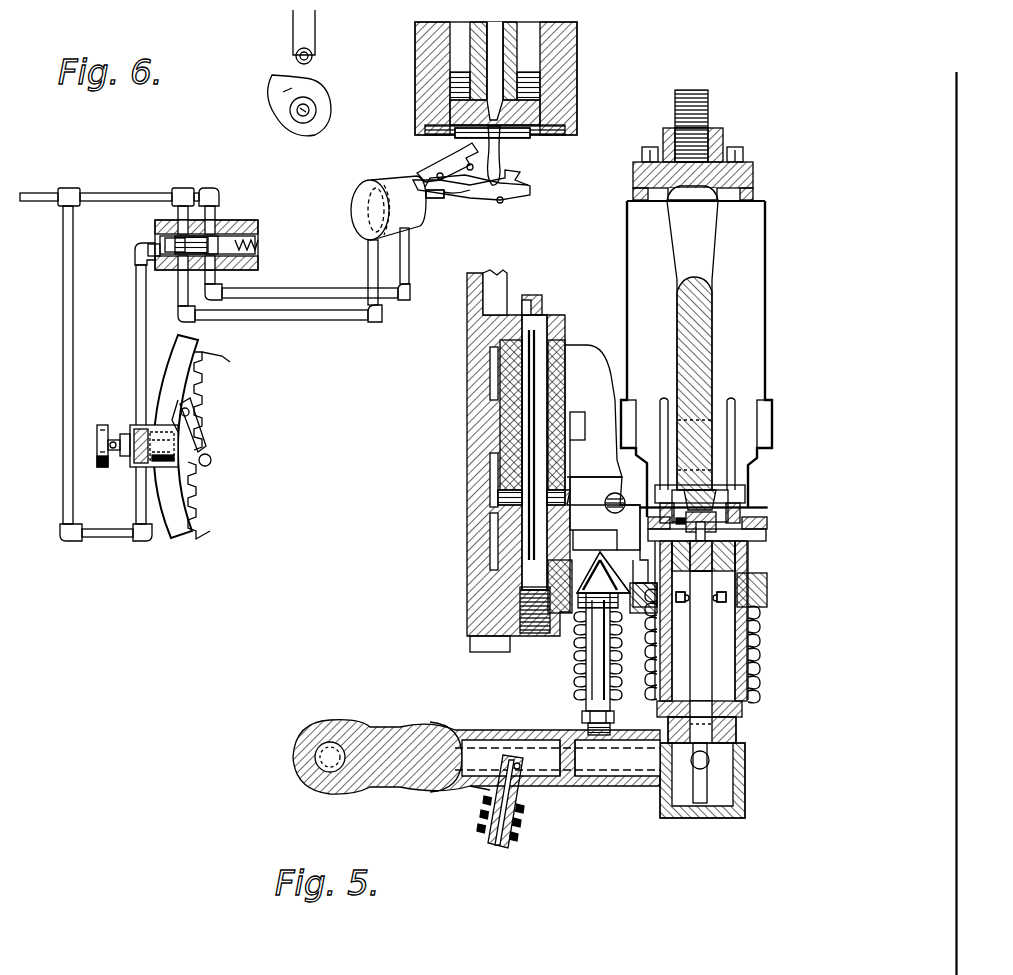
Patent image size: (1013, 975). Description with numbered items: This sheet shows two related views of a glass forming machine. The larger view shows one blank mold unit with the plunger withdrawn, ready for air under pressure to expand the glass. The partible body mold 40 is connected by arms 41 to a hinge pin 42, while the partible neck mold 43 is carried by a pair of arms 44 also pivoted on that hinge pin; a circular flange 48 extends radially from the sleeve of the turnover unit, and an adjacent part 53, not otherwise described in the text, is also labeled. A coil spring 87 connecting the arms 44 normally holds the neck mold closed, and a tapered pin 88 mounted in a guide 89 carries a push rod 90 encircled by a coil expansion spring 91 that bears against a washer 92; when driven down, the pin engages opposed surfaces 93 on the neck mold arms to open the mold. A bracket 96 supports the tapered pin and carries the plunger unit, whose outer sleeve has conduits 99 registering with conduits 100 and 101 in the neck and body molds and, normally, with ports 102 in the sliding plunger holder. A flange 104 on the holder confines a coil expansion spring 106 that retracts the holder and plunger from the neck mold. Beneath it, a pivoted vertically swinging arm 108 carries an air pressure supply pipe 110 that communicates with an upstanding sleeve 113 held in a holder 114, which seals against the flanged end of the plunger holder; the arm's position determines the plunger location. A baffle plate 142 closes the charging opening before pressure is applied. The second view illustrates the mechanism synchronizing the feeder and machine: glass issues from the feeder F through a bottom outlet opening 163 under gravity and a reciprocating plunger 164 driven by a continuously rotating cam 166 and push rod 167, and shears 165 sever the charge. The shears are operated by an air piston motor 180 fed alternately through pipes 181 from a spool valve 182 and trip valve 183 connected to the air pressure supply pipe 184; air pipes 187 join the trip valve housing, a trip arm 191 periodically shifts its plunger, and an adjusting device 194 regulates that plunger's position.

In FIG. 5, the partible body mold 40 is at (635, 260).
In FIG. 5, the arms 41 is at (595, 355).
In FIG. 5, the hinge pin 42 is at (542, 302).
In FIG. 5, the partible neck mold 43 is at (725, 490).
In FIG. 5, the arms 44 is at (585, 522).
In FIG. 5, the circular flange 48 is at (470, 590).
In FIG. 5, the stop 53 is at (475, 640).
In FIG. 5, the coil spring 87 is at (628, 486).
In FIG. 5, the tapered pin 88 is at (622, 572).
In FIG. 5, the guide 89 is at (646, 612).
In FIG. 5, the push rod 90 is at (585, 655).
In FIG. 5, the coil expansion spring 91 is at (585, 678).
In FIG. 5, the washer 92 is at (614, 718).
In FIG. 5, the opposed surfaces 93 is at (612, 556).
In FIG. 5, the bracket 96 is at (767, 592).
In FIG. 5, the conduits 99 is at (740, 557).
In FIG. 5, the conduits 100 is at (668, 500).
In FIG. 5, the conduits 101 is at (734, 410).
In FIG. 5, the ports 102 is at (701, 636).
In FIG. 5, the flange 104 is at (742, 708).
In FIG. 5, the coil expansion spring 106 is at (750, 622).
In FIG. 5, the pivoted vertically swinging arm 108 is at (480, 713).
In FIG. 5, the air pressure supply pipe 110 is at (538, 754).
In FIG. 5, the upstanding sleeve 113 is at (736, 730).
In FIG. 5, the holder 114 is at (745, 792).
In FIG. 5, the baffle plate 142 is at (752, 160).
In FIG. 5, the bottom outlet opening 163 is at (510, 142).
In FIG. 5, the reciprocating plunger 164 is at (502, 34).
In FIG. 5, the shears 165 is at (515, 198).
In FIG. 6, the continuously rotating cam 166 is at (305, 80).
In FIG. 6, the push rod 167 is at (305, 30).
In FIG. 5, the feeder F is at (575, 66).
In FIG. 6, the air operated piston type motor 180 is at (420, 228).
In FIG. 6, the pipes 181 is at (334, 300).
In FIG. 6, the spool valve 182 is at (222, 222).
In FIG. 6, the trip valve 183 is at (185, 470).
In FIG. 6, the air pressure supply pipe 184 is at (52, 198).
In FIG. 6, the air pipes 187 is at (140, 358).
In FIG. 6, the trip arm 191 is at (205, 442).
In FIG. 6, the adjusting device 194 is at (102, 425).